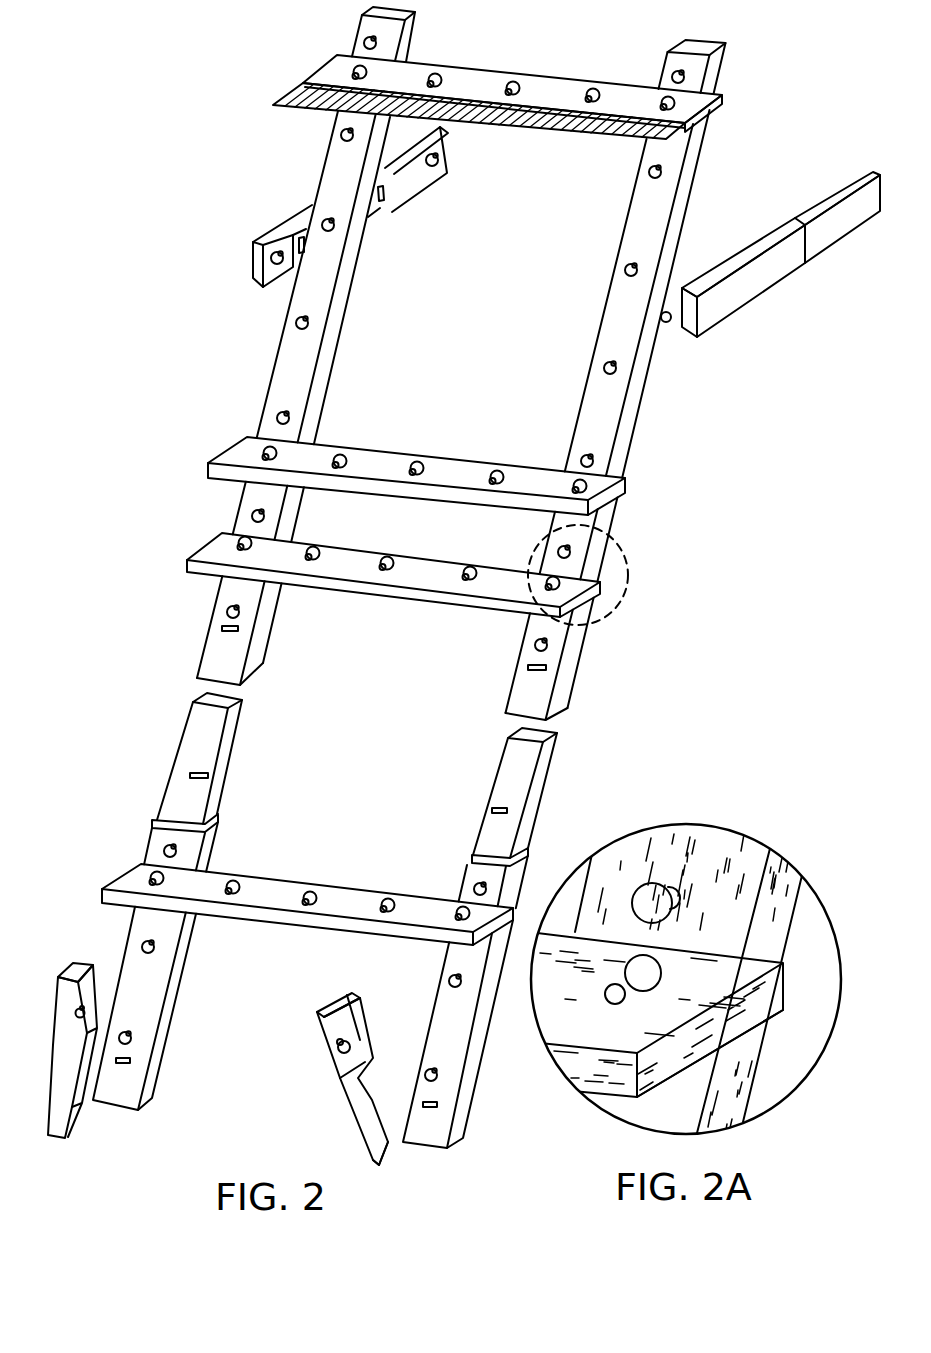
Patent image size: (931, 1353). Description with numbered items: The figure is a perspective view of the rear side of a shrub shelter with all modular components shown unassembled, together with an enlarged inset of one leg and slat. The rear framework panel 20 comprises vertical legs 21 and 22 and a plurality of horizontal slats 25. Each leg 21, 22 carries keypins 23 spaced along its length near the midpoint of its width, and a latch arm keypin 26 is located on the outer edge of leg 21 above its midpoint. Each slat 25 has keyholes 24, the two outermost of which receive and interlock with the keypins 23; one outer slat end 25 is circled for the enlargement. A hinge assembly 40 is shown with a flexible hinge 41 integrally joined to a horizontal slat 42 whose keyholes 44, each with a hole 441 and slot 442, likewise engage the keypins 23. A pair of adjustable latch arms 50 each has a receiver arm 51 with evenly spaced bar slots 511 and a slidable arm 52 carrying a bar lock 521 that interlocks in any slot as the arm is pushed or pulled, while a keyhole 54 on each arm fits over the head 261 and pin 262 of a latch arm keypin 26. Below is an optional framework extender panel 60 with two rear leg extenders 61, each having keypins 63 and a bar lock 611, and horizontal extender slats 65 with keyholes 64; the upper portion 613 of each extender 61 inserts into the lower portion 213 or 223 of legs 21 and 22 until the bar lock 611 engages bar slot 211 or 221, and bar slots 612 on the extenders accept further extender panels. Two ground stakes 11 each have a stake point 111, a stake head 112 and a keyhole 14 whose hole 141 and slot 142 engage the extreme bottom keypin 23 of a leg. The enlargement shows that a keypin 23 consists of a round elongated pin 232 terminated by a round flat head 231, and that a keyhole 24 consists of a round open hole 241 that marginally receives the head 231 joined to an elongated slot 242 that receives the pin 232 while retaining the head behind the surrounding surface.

In FIG. 2, the ground stake 11 is at (258, 1067).
In FIG. 2, the keyhole 14 is at (358, 1077).
In FIG. 2, the rear framework panel 20 is at (221, 522).
In FIG. 2, the leg 21 is at (579, 380).
In FIG. 2A, the leg 21 is at (742, 890).
In FIG. 2, the leg 22 is at (295, 349).
In FIG. 2, the keypin 23 is at (663, 75).
In FIG. 2A, the keypin 23 is at (748, 854).
In FIG. 2, the keyhole 24 is at (538, 576).
In FIG. 2A, the keyhole 24 is at (749, 1029).
In FIG. 2, the horizontal slat 25 is at (565, 627).
In FIG. 2A, the horizontal slat 25 is at (720, 1052).
In FIG. 2, the latch arm keypin 26 is at (629, 340).
In FIG. 2, the hinge assembly 40 is at (298, 63).
In FIG. 2, the flexible hinge 41 is at (272, 104).
In FIG. 2, the horizontal slat 42 is at (335, 57).
In FIG. 2, the keyhole 44 is at (514, 63).
In FIG. 2, the adjustable latch arm 50 is at (286, 196).
In FIG. 2, the receiver arm 51 is at (498, 266).
In FIG. 2, the slidable arm 52 is at (648, 195).
In FIG. 2, the keyhole 54 is at (268, 262).
In FIG. 2, the framework extender panel 60 is at (140, 833).
In FIG. 2, the rear leg extender 61 is at (285, 906).
In FIG. 2, the keypin 63 is at (185, 850).
In FIG. 2, the keyhole 64 is at (453, 910).
In FIG. 2, the horizontal extender slat 65 is at (133, 875).
In FIG. 2, the stake point 111 is at (383, 1148).
In FIG. 2, the stake head 112 is at (333, 1005).
In FIG. 2, the hole 141 is at (298, 1041).
In FIG. 2, the slot 142 is at (336, 1049).
In FIG. 2, the bar slot 211 is at (526, 667).
In FIG. 2, the lower portion 213 is at (530, 703).
In FIG. 2, the bar slot 221 is at (242, 629).
In FIG. 2, the lower portion 223 is at (228, 665).
In FIG. 2A, the head 231 is at (648, 893).
In FIG. 2A, the pin 232 is at (677, 887).
In FIG. 2A, the hole 241 is at (650, 984).
In FIG. 2A, the slot 242 is at (620, 997).
In FIG. 2, the head 261 is at (604, 303).
In FIG. 2, the pin 262 is at (662, 314).
In FIG. 2, the hole 441 is at (488, 66).
In FIG. 2, the slot 442 is at (442, 79).
In FIG. 2, the bar slot 511 is at (290, 240).
In FIG. 2, the bar lock 521 is at (385, 196).
In FIG. 2, the bar lock 611 is at (510, 812).
In FIG. 2, the bar slot 612 is at (132, 1062).
In FIG. 2, the upper portion 613 is at (520, 750).